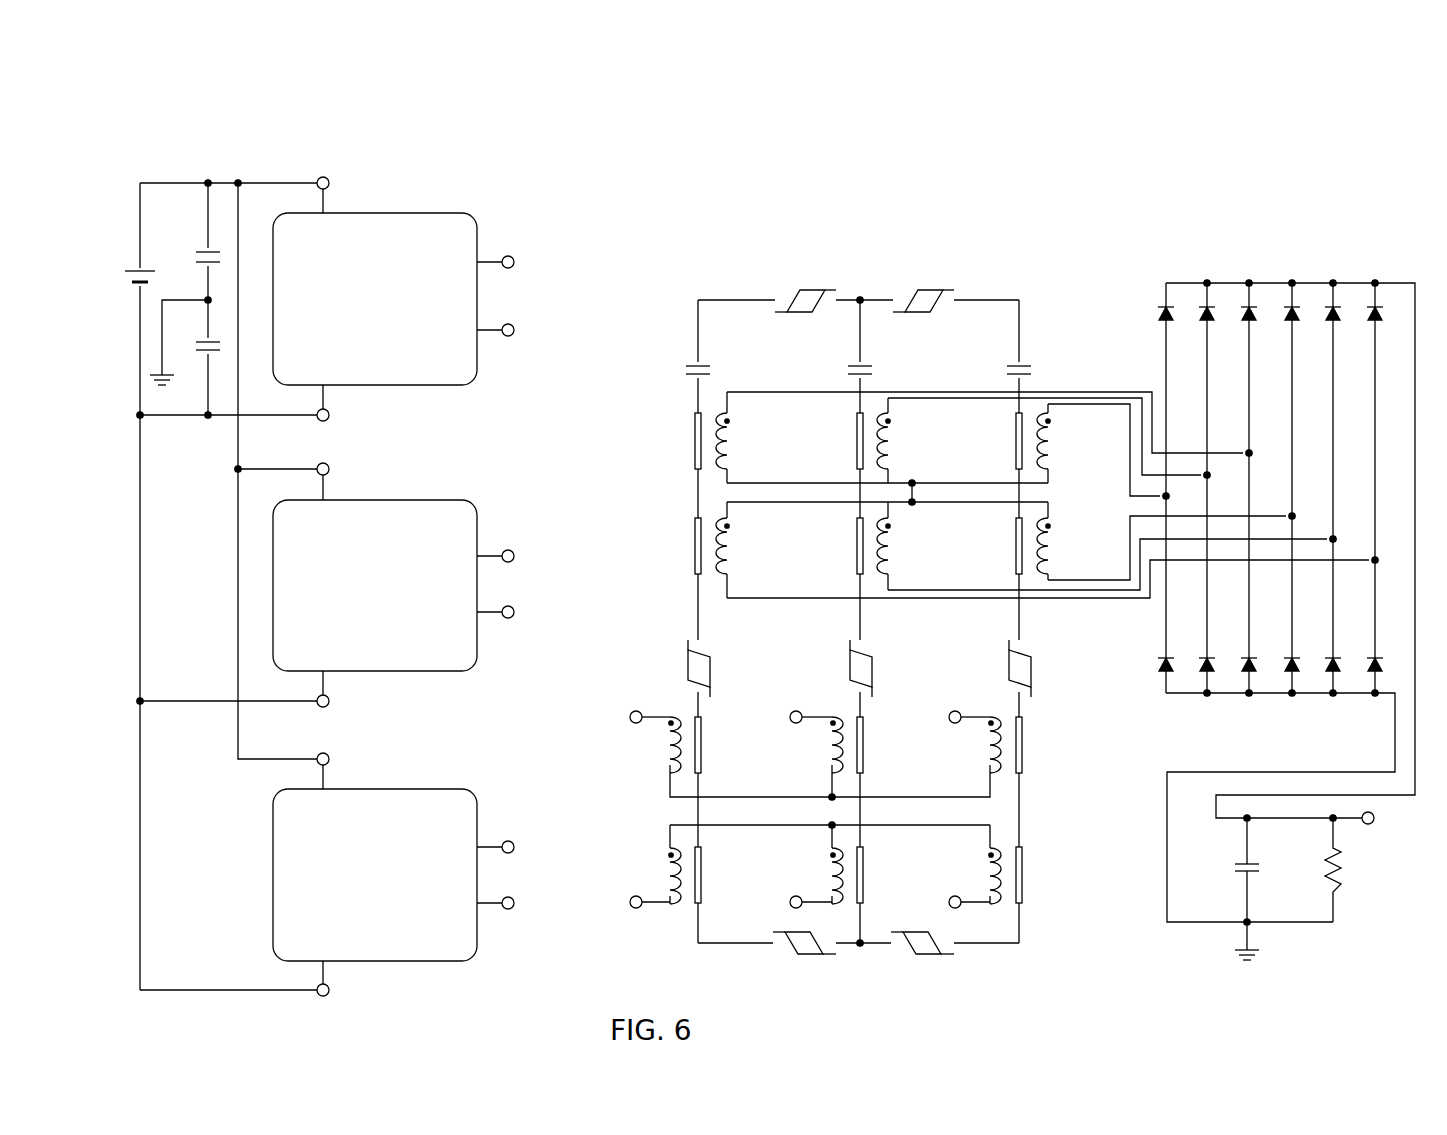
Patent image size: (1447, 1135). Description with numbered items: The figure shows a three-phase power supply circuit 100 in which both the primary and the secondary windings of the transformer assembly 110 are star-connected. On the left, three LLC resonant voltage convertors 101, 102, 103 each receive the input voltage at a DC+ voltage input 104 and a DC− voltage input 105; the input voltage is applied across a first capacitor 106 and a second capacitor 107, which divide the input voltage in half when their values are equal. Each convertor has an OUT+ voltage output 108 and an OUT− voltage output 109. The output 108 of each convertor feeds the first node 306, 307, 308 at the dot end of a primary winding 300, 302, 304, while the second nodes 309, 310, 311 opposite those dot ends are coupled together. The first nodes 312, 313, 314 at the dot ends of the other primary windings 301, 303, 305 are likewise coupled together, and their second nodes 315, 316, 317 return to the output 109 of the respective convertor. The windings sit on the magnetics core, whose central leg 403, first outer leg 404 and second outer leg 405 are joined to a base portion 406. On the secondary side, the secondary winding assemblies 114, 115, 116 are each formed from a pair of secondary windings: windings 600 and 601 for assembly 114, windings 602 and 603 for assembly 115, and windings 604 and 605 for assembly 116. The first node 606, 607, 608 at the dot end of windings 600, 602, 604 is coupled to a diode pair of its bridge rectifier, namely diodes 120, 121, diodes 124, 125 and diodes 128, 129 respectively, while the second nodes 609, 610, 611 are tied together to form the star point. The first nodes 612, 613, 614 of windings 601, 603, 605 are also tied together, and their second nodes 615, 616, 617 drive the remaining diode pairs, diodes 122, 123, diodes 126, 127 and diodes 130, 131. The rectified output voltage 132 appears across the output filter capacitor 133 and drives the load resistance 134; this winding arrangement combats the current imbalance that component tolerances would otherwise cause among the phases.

The three-phase power supply circuit 100 is at (148, 150).
The LLC resonant voltage convertor 101 is at (393, 215).
The LLC resonant voltage convertor 102 is at (393, 502).
The LLC resonant voltage convertor 103 is at (393, 791).
The voltage input 104 is at (330, 186).
The voltage input 105 is at (330, 416).
The capacitor C1 106 is at (208, 248).
The capacitor C2 107 is at (206, 352).
The voltage output 108 is at (507, 256).
The voltage output 109 is at (509, 336).
The transformer assembly 110 is at (858, 226).
The secondary winding assembly 114 is at (728, 368).
The secondary winding assembly 115 is at (889, 368).
The secondary winding assembly 116 is at (1049, 368).
The diode D1 120 is at (1246, 303).
The diode D2 121 is at (1247, 676).
The diode D3 122 is at (1372, 303).
The diode D4 123 is at (1373, 676).
The diode D5 124 is at (1204, 303).
The diode D6 125 is at (1205, 676).
The diode D7 126 is at (1330, 303).
The diode D8 127 is at (1331, 676).
The diode D9 128 is at (1162, 303).
The diode D10 129 is at (1163, 676).
The diode D11 130 is at (1289, 303).
The diode D12 131 is at (1290, 676).
The output voltage VOUT 132 is at (1376, 820).
The output filter capacitor C3 133 is at (1243, 862).
The load resistance RLOAD 134 is at (1340, 893).
The primary winding P1 300 is at (678, 746).
The primary winding P4 301 is at (680, 876).
The primary winding P2 302 is at (840, 746).
The primary winding P5 303 is at (842, 876).
The primary winding P3 304 is at (998, 746).
The primary winding P6 305 is at (1002, 876).
The first node 306 is at (671, 712).
The first node 307 is at (834, 712).
The first node 308 is at (993, 712).
The second node 309 is at (670, 774).
The second node 310 is at (832, 774).
The second node 311 is at (990, 774).
The first node 312 is at (670, 851).
The first node 313 is at (832, 851).
The first node 314 is at (990, 851).
The second node 315 is at (670, 904).
The second node 316 is at (832, 904).
The second node 317 is at (990, 904).
The central leg 403 is at (874, 664).
The first outer leg 404 is at (712, 664).
The second outer leg 405 is at (1033, 664).
The base portion 406 is at (798, 287).
The secondary winding P1 600 is at (719, 440).
The secondary winding P4 601 is at (719, 545).
The secondary winding P2 602 is at (880, 440).
The secondary winding P5 603 is at (880, 545).
The secondary winding P3 604 is at (1040, 440).
The secondary winding P6 605 is at (1040, 545).
The first node 606 is at (731, 412).
The first node 607 is at (892, 412).
The first node 608 is at (1052, 412).
The second node 609 is at (731, 471).
The second node 610 is at (912, 481).
The second node 611 is at (1052, 471).
The first node 612 is at (733, 518).
The first node 613 is at (892, 518).
The first node 614 is at (1050, 517).
The second node 615 is at (731, 575).
The second node 616 is at (892, 575).
The second node 617 is at (1052, 576).